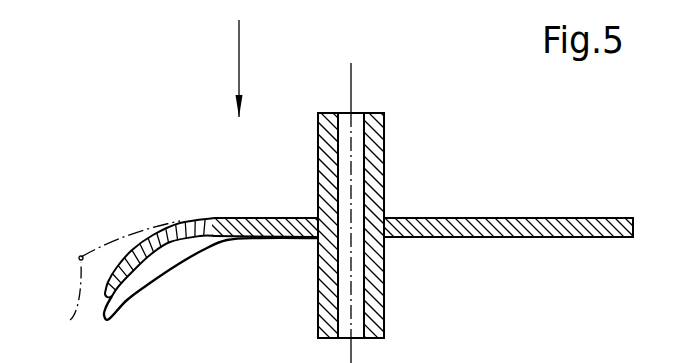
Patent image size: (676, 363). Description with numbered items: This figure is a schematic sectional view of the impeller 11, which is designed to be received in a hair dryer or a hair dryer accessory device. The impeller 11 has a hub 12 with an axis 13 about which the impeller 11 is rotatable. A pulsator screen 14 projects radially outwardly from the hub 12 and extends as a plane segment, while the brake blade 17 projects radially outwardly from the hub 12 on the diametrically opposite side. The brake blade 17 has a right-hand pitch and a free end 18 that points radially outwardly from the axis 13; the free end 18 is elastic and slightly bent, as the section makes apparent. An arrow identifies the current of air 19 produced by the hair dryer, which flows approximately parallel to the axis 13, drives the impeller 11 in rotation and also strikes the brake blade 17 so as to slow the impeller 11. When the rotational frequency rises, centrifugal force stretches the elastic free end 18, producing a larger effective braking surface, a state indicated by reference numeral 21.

The impeller 11 is at (295, 260).
The hub 12 is at (378, 325).
The axis 13 is at (355, 193).
The pulsator screen 14 is at (475, 218).
The brake blade 17 is at (219, 222).
The free end 18 is at (100, 228).
The current of air 19 is at (241, 47).
The stretched position of the free end 21 is at (63, 301).